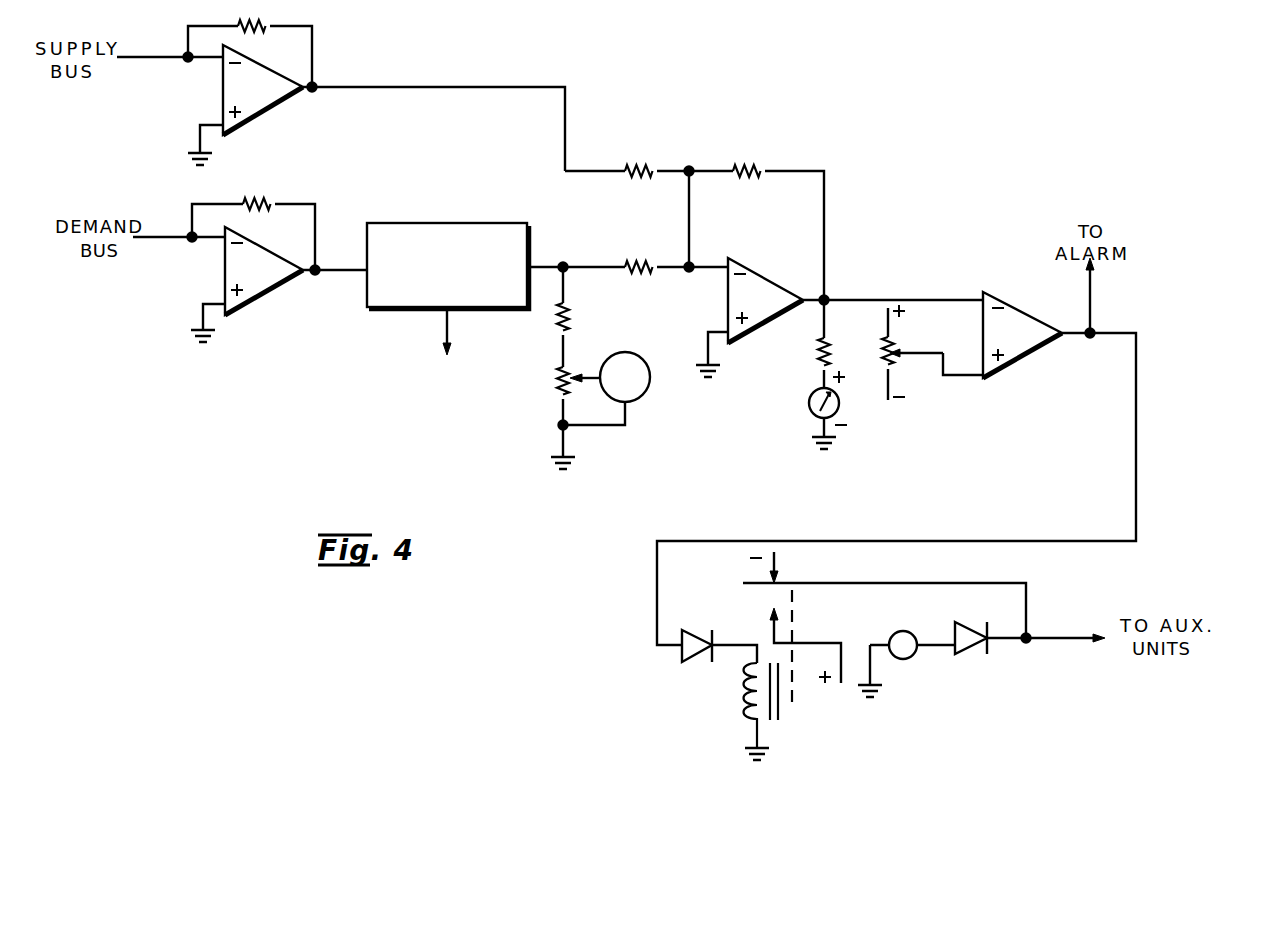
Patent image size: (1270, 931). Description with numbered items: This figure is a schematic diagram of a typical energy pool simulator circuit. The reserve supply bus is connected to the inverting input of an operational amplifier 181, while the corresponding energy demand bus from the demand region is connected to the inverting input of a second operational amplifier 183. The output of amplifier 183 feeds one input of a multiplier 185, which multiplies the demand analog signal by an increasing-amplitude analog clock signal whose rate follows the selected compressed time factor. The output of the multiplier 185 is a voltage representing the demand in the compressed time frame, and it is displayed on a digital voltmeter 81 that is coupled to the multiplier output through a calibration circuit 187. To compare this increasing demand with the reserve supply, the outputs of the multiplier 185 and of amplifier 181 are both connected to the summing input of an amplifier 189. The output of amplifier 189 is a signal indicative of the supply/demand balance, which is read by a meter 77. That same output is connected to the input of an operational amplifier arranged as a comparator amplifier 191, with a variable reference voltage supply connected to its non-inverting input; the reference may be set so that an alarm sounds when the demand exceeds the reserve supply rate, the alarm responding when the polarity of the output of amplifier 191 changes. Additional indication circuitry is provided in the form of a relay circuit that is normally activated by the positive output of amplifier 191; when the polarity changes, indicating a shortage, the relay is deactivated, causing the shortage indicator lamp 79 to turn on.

The operational amplifier 181 is at (268, 110).
The operational amplifier 183 is at (268, 297).
The multiplier 185 is at (433, 223).
The calibration circuit 187 is at (566, 368).
The digital voltmeter 81 is at (632, 355).
The amplifier 189 is at (770, 323).
The meter 77 is at (843, 408).
The comparator amplifier 191 is at (1035, 353).
The shortage indicator lamp 79 is at (908, 631).